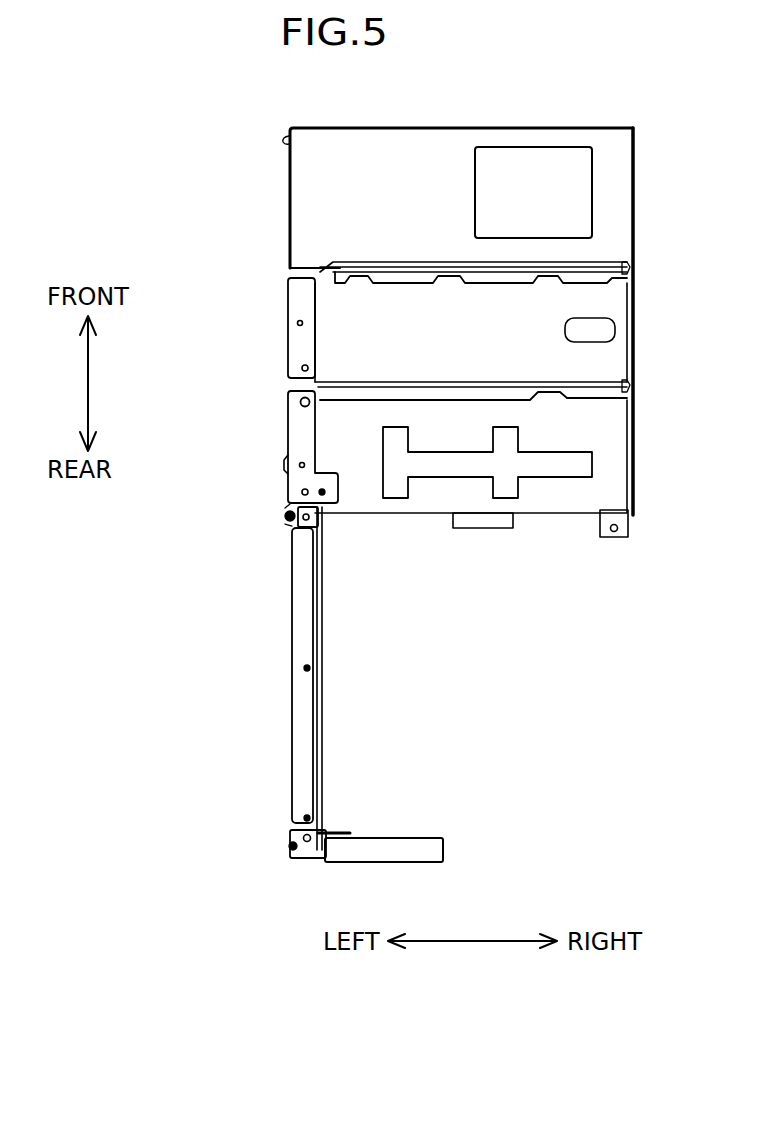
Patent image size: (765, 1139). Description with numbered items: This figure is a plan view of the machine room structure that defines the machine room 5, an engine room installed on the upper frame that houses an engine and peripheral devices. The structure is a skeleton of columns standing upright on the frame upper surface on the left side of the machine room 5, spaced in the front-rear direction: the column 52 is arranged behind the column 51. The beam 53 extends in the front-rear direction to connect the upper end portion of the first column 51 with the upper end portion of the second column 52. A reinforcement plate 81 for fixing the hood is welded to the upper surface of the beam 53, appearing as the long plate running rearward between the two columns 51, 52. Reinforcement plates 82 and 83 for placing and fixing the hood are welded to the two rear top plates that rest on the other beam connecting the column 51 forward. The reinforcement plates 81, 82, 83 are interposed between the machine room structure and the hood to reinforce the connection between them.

The machine room 5 is at (531, 684).
The column 51 is at (288, 518).
The column 52 is at (293, 835).
The beam 53 is at (322, 655).
The reinforcement plate 81 is at (296, 628).
The reinforcement plate 82 is at (296, 425).
The reinforcement plate 83 is at (296, 333).